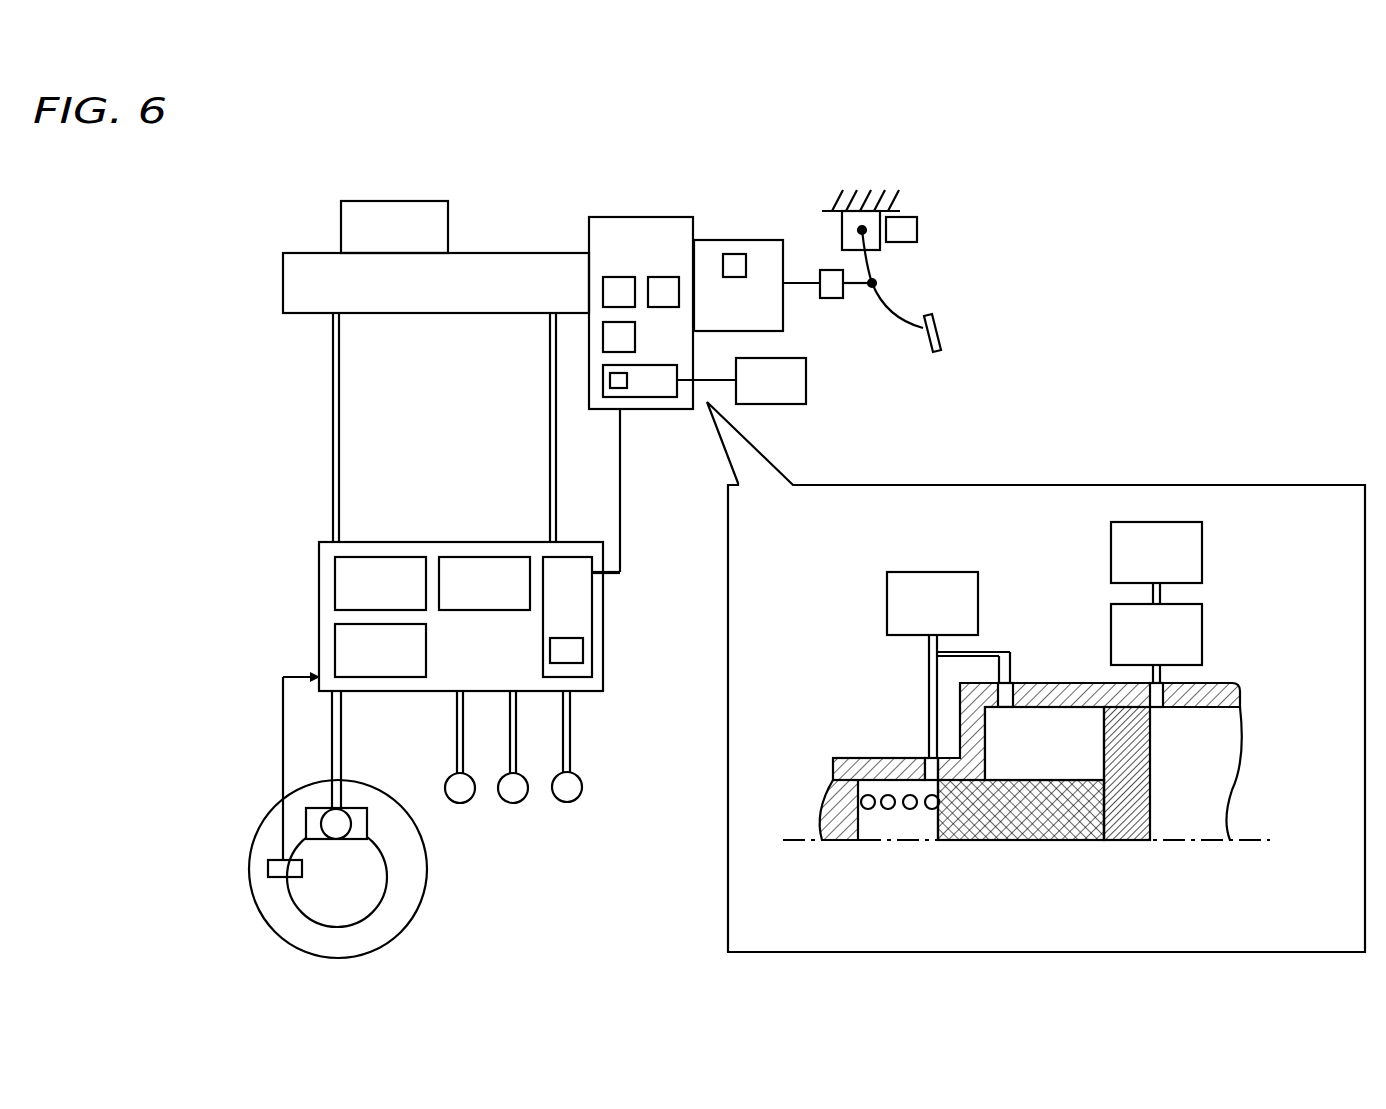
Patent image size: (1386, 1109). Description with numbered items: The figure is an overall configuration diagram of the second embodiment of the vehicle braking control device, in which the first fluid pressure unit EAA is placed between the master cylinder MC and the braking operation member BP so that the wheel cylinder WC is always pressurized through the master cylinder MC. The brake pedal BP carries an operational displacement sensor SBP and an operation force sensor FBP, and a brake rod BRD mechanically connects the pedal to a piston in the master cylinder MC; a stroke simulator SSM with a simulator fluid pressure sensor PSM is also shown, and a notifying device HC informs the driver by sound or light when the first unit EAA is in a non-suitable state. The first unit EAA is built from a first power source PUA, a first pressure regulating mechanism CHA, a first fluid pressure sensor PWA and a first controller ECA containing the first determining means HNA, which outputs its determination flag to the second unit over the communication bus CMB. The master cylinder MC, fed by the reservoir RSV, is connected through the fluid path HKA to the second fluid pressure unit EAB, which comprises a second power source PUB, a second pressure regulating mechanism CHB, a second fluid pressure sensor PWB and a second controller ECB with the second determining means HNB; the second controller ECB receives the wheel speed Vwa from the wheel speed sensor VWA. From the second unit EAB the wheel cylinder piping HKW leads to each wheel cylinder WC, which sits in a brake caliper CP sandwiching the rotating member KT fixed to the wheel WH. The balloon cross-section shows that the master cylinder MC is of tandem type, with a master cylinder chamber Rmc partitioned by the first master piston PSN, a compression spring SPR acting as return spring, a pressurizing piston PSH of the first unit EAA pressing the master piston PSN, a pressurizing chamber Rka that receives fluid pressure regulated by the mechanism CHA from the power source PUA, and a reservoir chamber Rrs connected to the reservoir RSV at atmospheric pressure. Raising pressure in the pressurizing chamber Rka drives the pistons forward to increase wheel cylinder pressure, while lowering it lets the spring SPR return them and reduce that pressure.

The reservoir RSV is at (675, 479).
The master cylinder MC is at (850, 758).
The first fluid pressure unit EAA is at (1268, 585).
The first power source PUA is at (607, 275).
The first fluid pressure sensor PWA is at (677, 277).
The first pressure regulating mechanism CHA is at (608, 322).
The first controller ECA is at (640, 397).
The first determining means HNA is at (605, 375).
The stroke simulator SSM is at (757, 285).
The simulator fluid pressure sensor PSM is at (734, 254).
The operation force sensor FBP is at (833, 306).
The brake rod BRD is at (803, 280).
The braking operation member BP is at (892, 271).
The operational displacement sensor SBP is at (941, 232).
The notifying device HC is at (741, 381).
The fluid path HKA is at (333, 432).
The communication bus CMB is at (650, 490).
The second fluid pressure unit EAB is at (447, 542).
The second power source PUB is at (380, 583).
The second fluid pressure sensor PWB is at (484, 583).
The second pressure regulating mechanism CHB is at (380, 650).
The second controller ECB is at (585, 610).
The second determining means HNB is at (550, 652).
The wheel speed Vwa is at (260, 768).
The wheel speed sensor VWA is at (282, 868).
The fluid path HKW is at (341, 737).
The wheel WH is at (263, 915).
The rotating member KT is at (334, 870).
The brake caliper CP is at (363, 817).
The wheel cylinder WC is at (357, 840).
The first master piston PSN is at (985, 820).
The reservoir chamber Rrs is at (1059, 719).
The pressurizing piston PSH is at (1120, 827).
The pressurizing chamber Rka is at (1201, 826).
The master cylinder chamber Rmc is at (885, 820).
The compression spring SPR is at (903, 795).